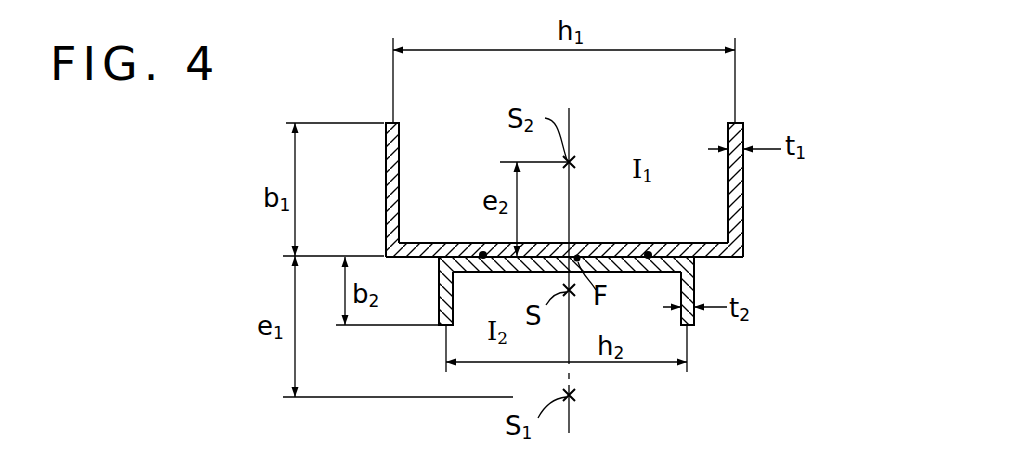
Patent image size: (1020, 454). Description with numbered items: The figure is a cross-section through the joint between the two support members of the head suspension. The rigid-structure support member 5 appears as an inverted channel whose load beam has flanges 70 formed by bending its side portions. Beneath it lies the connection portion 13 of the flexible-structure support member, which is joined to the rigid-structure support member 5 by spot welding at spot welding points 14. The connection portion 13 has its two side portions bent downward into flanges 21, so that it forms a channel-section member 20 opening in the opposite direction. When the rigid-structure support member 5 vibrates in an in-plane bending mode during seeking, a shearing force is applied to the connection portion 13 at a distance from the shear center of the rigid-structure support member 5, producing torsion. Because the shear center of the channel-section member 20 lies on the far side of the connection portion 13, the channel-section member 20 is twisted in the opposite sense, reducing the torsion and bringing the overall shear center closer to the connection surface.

The rigid-structure support member 5 is at (562, 205).
The flanges 70 is at (387, 182).
The connection portion 13 is at (709, 258).
The spot welding points 14 is at (483, 252).
The channel-section member 20 is at (581, 332).
The flanges 21 is at (439, 300).